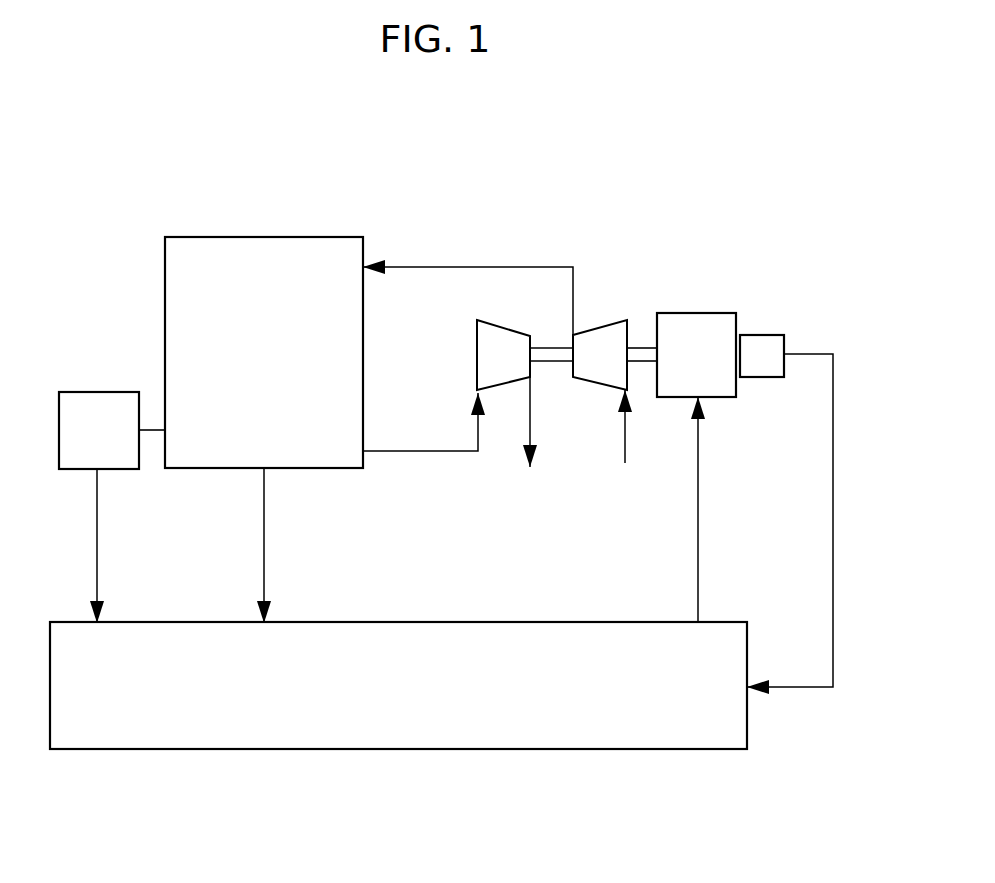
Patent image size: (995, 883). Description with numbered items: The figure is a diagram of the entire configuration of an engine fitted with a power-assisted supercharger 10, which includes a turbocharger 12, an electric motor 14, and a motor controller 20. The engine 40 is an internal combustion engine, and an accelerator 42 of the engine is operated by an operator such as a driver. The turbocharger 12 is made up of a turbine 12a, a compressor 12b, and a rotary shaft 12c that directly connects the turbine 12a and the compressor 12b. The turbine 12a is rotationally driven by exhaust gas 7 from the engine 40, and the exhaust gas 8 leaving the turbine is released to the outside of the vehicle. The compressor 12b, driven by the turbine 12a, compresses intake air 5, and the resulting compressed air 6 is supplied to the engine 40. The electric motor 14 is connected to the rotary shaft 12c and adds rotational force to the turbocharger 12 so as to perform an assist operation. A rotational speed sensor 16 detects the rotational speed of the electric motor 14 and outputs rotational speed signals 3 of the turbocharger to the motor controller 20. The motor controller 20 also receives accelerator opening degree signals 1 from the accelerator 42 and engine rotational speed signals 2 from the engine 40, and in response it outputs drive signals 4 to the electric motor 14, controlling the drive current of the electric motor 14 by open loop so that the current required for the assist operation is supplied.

The accelerator opening degree signals 1 is at (107, 602).
The engine rotational speed signals 2 is at (257, 600).
The rotational speed signals 3 is at (767, 692).
The drive signals 4 is at (703, 418).
The air 5 is at (625, 448).
The compressed air 6 is at (468, 283).
The exhaust gas 7 is at (420, 439).
The exhaust gas released to the outside 8 is at (530, 442).
The power-assisted supercharger 10 is at (732, 242).
The turbocharger 12 is at (595, 250).
The turbine 12a is at (473, 355).
The compressor 12b is at (605, 323).
The rotary shaft 12c is at (550, 352).
The electric motor 14 is at (692, 330).
The rotational speed sensor 16 is at (762, 343).
The motor controller 20 is at (398, 685).
The engine 40 is at (251, 352).
The accelerator 42 is at (99, 430).